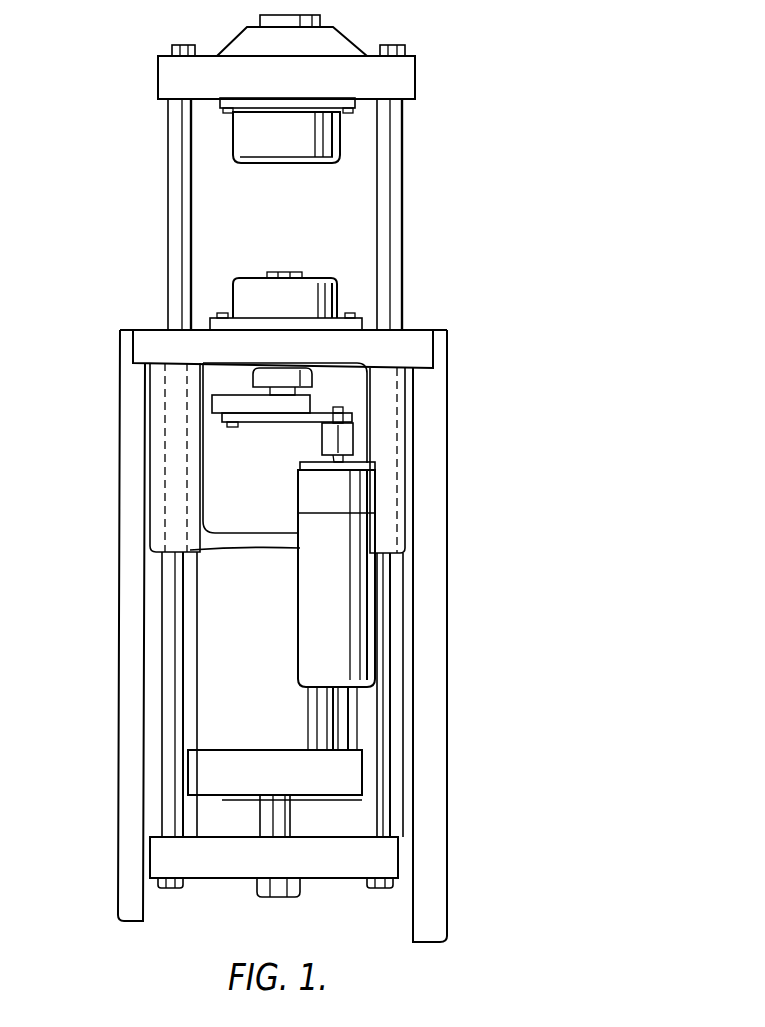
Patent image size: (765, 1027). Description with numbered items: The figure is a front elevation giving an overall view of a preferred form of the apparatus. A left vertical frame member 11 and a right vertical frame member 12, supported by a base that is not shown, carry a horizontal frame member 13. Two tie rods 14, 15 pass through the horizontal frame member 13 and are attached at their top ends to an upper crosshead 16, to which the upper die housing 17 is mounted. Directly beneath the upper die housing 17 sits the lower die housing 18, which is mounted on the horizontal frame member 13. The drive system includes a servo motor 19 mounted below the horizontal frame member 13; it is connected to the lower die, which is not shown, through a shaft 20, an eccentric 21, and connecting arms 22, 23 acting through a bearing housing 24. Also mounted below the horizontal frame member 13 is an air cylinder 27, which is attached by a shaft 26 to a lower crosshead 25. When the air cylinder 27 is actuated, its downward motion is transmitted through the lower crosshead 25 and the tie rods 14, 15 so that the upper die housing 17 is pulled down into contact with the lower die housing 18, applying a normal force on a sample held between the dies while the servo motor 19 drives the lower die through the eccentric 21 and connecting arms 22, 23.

The left vertical frame member 11 is at (118, 415).
The right vertical frame member 12 is at (447, 418).
The horizontal frame member 13 is at (415, 331).
The tie rod 14 is at (168, 204).
The tie rod 15 is at (403, 229).
The upper crosshead 16 is at (415, 78).
The upper die housing 17 is at (298, 165).
The lower die housing 18 is at (312, 278).
The servo motor 19 is at (298, 490).
The shaft 20 is at (305, 456).
The eccentric 21 is at (353, 437).
The connecting arm 22 is at (257, 422).
The connecting arm 23 is at (313, 399).
The bearing housing 24 is at (253, 379).
The lower crosshead 25 is at (233, 882).
The shaft 26 is at (297, 818).
The air cylinder 27 is at (223, 798).